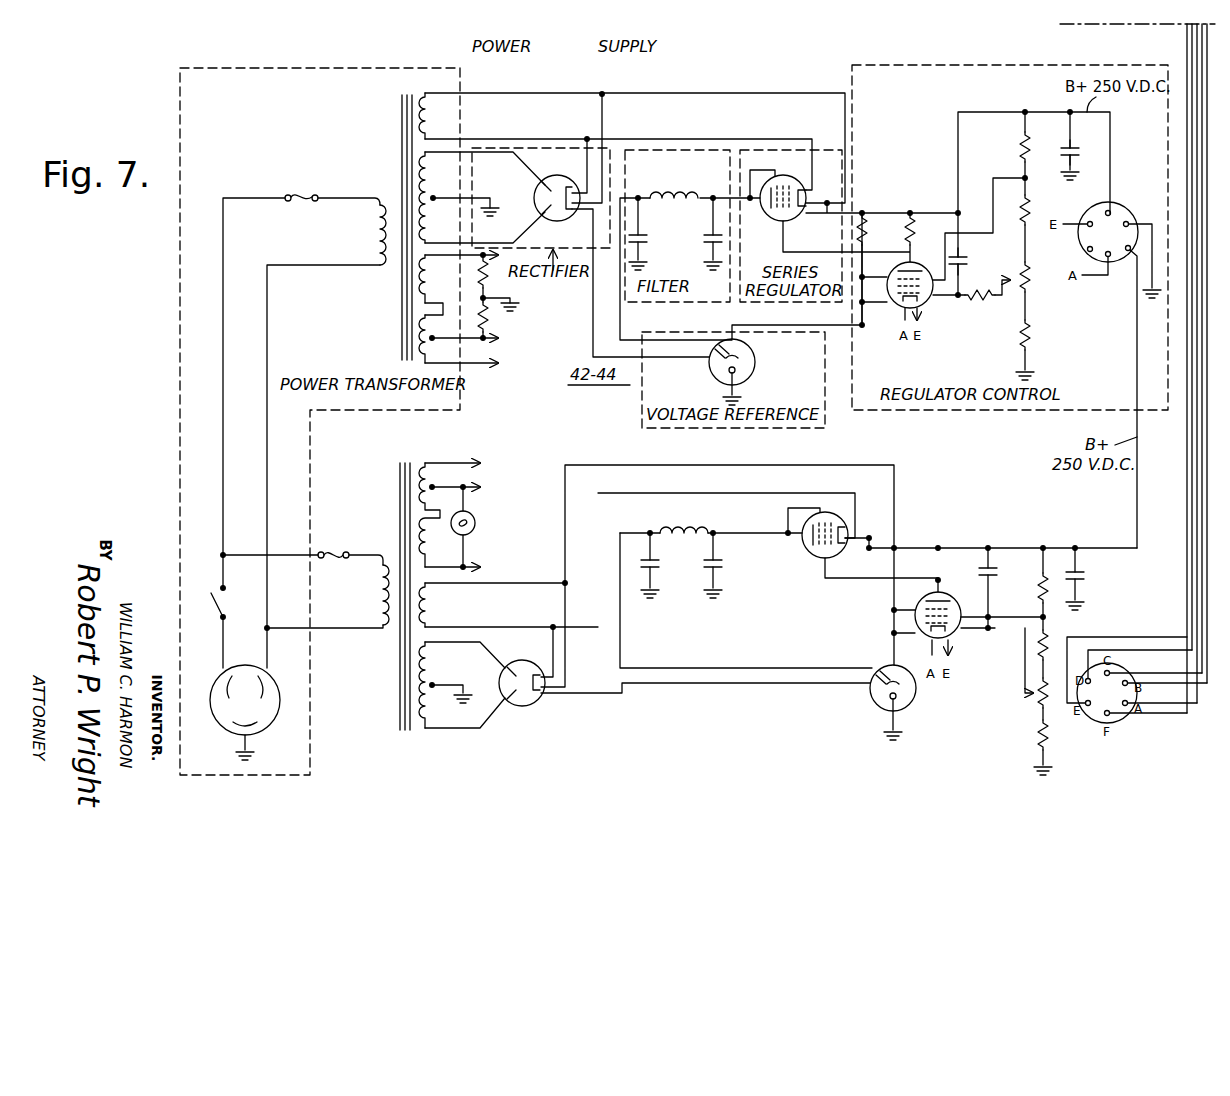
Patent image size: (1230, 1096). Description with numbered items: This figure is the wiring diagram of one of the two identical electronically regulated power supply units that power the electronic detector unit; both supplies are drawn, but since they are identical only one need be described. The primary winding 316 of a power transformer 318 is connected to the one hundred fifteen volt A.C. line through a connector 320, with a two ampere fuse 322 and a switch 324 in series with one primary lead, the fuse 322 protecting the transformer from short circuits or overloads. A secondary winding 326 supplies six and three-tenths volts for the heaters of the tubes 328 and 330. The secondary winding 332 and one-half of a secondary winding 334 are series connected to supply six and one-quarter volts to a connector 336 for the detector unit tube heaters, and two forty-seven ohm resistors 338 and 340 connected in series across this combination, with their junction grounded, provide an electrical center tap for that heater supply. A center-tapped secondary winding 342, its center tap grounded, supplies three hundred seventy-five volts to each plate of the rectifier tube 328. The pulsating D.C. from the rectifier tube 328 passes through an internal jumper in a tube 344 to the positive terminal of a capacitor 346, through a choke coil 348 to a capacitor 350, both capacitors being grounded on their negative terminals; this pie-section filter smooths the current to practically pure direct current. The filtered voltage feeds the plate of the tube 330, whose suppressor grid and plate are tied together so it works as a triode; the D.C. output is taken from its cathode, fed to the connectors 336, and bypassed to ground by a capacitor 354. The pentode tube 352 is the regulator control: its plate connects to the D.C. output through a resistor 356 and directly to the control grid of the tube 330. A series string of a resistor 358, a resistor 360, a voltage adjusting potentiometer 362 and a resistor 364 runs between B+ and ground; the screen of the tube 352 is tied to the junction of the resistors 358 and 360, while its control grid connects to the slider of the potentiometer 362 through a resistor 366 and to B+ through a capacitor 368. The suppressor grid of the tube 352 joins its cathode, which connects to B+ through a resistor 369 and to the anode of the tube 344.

The primary winding 316 is at (378, 210).
The power transformer 318 is at (378, 128).
The connector 320 is at (290, 660).
The two ampere fuse 322 is at (304, 192).
The switch 324 is at (228, 600).
The secondary winding 326 is at (426, 92).
The rectifier tube 328 is at (576, 180).
The 6Y6 tube 330 is at (787, 175).
The secondary winding 332 is at (423, 283).
The secondary winding 334 is at (430, 337).
The connector 336 is at (1117, 205).
The 47 ohm resistor 338 is at (491, 280).
The 47 ohm resistor 340 is at (498, 318).
The secondary winding 342 is at (423, 183).
The tube 344 is at (755, 367).
The 8 mfd. capacitor 346 is at (638, 242).
The choke coil 348 is at (674, 193).
The 8 mfd. capacitor 350 is at (710, 236).
The 6SH7 pentode tube 352 is at (917, 260).
The 1.0 mfd. capacitor 354 is at (1060, 153).
The 510K resistor 356 is at (909, 215).
The 27K resistor 358 is at (1022, 150).
The 62K resistor 360 is at (1028, 214).
The 25K voltage adjusting potentiometer 362 is at (1028, 267).
The 27K resistor 364 is at (1028, 327).
The 220K resistor 366 is at (985, 302).
The 0.25 mfd. capacitor 368 is at (963, 262).
The 47K resistor 369 is at (866, 215).